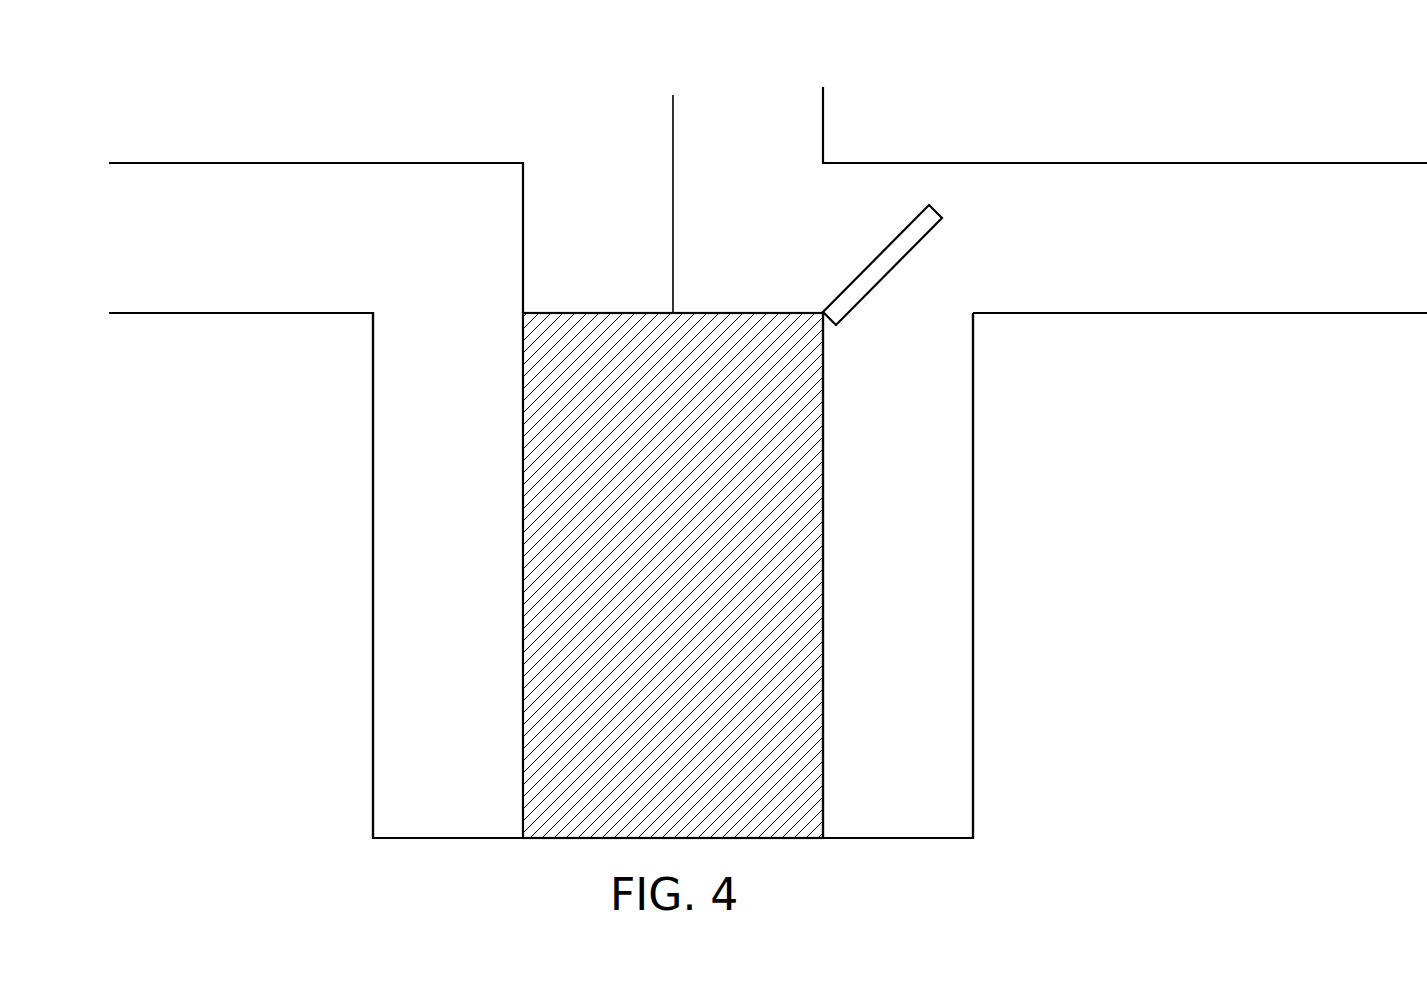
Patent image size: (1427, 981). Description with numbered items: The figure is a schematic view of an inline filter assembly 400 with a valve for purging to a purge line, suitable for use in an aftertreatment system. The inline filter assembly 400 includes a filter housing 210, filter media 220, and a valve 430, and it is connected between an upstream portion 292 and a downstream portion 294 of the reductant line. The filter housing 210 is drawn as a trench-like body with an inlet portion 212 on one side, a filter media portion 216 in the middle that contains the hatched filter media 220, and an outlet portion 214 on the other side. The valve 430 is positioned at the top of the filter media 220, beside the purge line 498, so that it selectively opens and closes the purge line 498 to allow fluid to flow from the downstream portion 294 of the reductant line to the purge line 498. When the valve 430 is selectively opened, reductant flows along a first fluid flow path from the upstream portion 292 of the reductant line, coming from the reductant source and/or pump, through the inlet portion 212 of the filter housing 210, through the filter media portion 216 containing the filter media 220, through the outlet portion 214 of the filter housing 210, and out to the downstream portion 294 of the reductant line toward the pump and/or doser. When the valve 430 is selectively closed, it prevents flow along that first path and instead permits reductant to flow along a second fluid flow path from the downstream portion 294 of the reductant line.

The upstream portion of the reductant line 292 is at (173, 175).
The downstream portion of the reductant line 294 is at (1385, 175).
The purge line 498 is at (679, 125).
The filter housing 210 is at (374, 520).
The inlet portion 212 is at (388, 458).
The outlet portion 214 is at (958, 575).
The filter media portion 216 is at (840, 680).
The filter media 220 is at (673, 575).
The inline filter assembly 400 is at (1048, 437).
The valve 430 is at (915, 233).